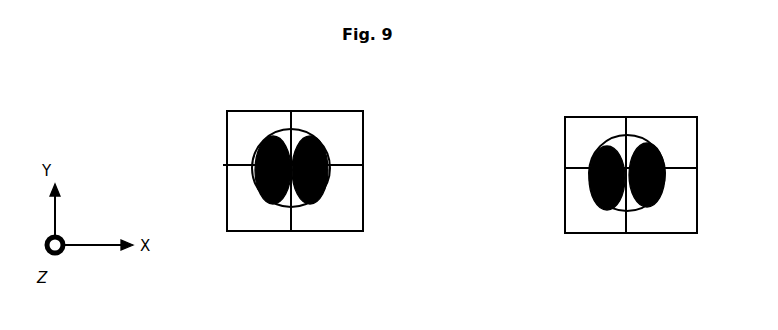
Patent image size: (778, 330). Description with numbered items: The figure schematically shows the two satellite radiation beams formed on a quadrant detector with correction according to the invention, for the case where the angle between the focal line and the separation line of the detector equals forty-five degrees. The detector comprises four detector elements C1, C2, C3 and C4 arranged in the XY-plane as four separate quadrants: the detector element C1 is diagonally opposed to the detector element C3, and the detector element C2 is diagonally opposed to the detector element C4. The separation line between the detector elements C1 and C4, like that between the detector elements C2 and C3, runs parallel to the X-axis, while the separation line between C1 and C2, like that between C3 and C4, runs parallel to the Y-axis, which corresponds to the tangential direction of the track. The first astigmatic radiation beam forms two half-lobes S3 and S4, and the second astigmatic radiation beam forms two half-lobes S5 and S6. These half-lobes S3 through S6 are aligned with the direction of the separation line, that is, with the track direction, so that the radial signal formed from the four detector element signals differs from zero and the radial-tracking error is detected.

The half-lobe S3 is at (283, 200).
The half-lobe S4 is at (300, 200).
The half-lobe S5 is at (615, 210).
The half-lobe S6 is at (636, 210).
The detector element C1 is at (411, 126).
The detector element C2 is at (510, 126).
The detector element C3 is at (510, 222).
The detector element C4 is at (410, 222).